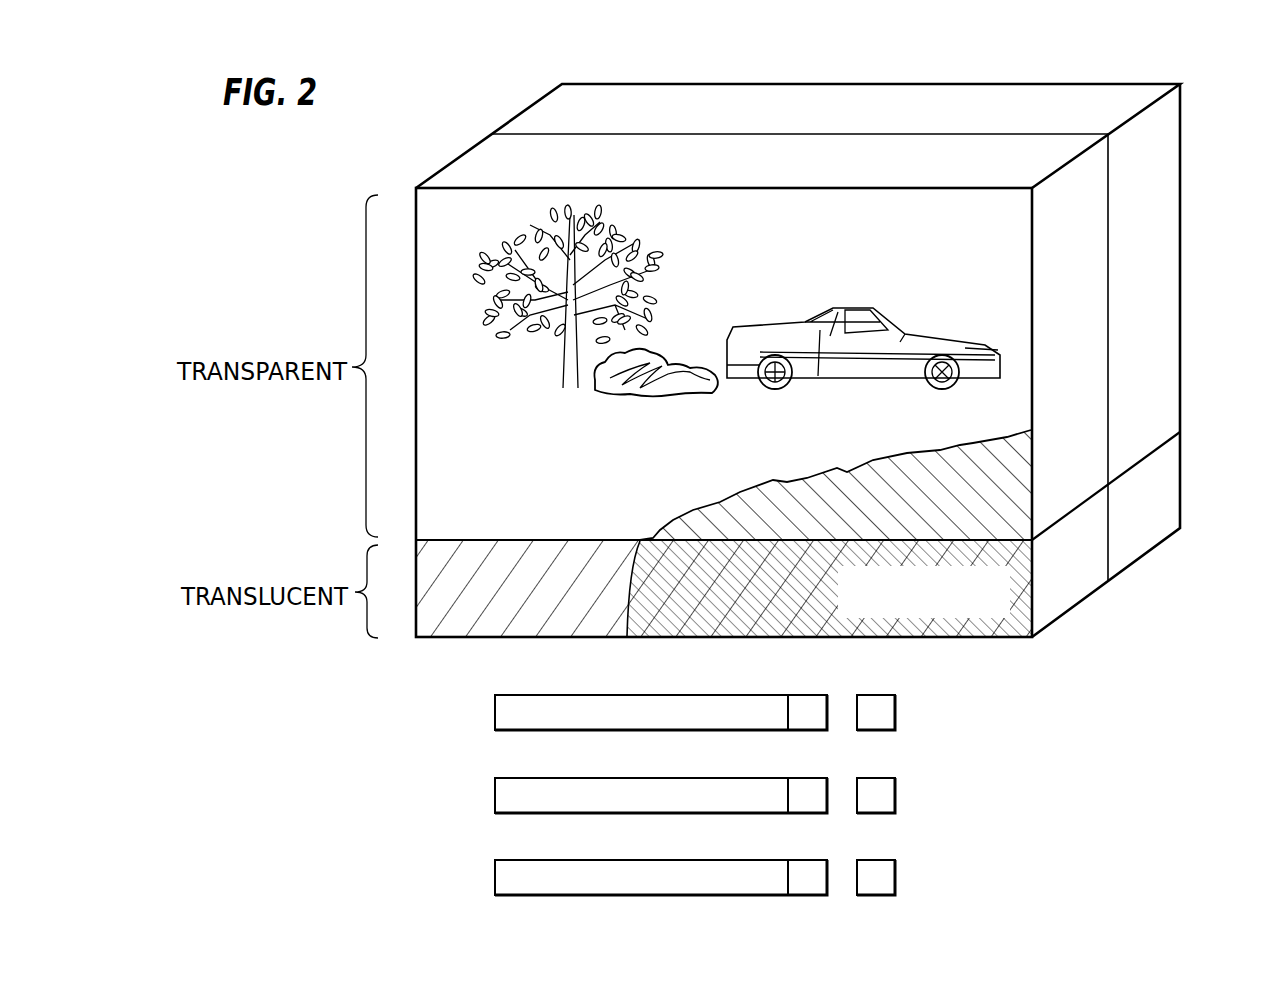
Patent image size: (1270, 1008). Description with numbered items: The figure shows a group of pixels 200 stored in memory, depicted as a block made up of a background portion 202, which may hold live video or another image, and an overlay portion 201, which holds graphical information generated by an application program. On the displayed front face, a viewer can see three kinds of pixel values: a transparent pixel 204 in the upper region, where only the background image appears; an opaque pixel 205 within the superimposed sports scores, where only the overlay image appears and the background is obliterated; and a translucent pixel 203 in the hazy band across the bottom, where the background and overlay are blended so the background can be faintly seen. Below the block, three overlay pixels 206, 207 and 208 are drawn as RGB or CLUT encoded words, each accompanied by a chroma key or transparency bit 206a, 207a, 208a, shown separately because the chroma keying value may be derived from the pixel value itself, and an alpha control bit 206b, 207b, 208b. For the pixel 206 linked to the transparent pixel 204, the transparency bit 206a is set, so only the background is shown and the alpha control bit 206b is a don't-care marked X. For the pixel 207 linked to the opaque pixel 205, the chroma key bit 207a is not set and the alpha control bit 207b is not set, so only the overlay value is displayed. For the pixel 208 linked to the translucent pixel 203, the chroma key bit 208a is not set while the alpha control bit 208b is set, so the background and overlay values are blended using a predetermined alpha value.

The group of pixels 200 is at (466, 128).
The overlay portion 201 is at (1085, 339).
The background portion 202 is at (1156, 176).
The translucent pixel 203 is at (495, 878).
The transparent pixel 204 is at (495, 712).
The opaque pixel 205 is at (895, 795).
The overlay pixel 206 is at (590, 732).
The transparency bit 206a is at (872, 695).
The alpha control bit 206b is at (799, 695).
The overlay pixel 207 is at (590, 814).
The chroma key function bit 207a is at (872, 778).
The alpha control bit 207b is at (799, 778).
The overlay pixel 208 is at (590, 896).
The chroma key function bit 208a is at (872, 860).
The alpha control bit 208b is at (799, 860).